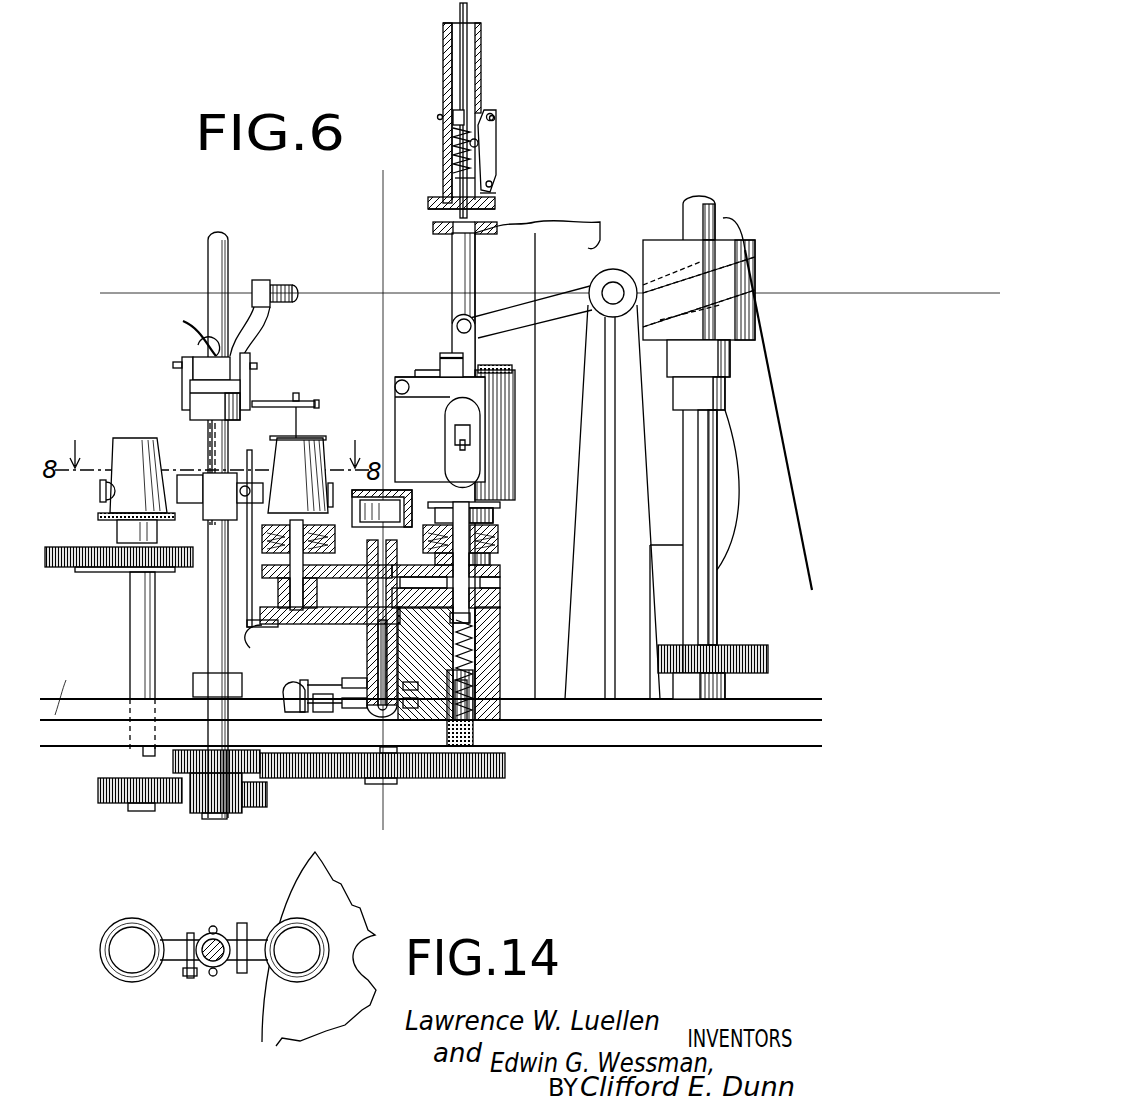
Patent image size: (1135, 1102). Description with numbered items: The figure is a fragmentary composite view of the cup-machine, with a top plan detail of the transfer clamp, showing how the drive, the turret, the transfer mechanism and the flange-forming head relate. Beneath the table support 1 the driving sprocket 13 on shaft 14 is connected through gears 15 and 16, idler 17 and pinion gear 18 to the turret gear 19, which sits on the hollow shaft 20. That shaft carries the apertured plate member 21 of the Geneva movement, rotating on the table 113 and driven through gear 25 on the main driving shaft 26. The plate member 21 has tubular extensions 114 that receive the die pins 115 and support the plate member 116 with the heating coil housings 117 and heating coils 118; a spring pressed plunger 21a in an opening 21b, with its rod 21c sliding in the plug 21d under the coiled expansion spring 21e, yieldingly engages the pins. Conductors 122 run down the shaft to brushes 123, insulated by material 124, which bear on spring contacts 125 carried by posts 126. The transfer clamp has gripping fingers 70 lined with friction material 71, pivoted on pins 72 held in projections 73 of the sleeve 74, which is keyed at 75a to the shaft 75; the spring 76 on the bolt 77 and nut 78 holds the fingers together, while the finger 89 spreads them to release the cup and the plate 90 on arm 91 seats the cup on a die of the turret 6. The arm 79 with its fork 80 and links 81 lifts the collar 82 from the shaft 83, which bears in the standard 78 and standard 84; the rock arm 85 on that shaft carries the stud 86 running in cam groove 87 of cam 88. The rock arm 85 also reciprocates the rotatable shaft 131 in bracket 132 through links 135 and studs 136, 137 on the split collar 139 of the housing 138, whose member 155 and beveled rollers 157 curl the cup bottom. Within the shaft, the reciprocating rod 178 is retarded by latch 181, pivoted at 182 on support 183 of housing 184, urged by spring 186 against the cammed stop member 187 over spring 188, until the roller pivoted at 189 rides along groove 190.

In FIG. 6, the table support 1 is at (61, 682).
In FIG. 6, the turret 6 is at (417, 520).
In FIG. 14, the turret 6 is at (336, 890).
In FIG. 6, the driving sprocket 13 is at (122, 570).
In FIG. 6, the shaft 14 is at (130, 683).
In FIG. 6, the gear 15 is at (105, 803).
In FIG. 6, the gear 16 is at (173, 762).
In FIG. 6, the idler 17 is at (267, 807).
In FIG. 6, the pinion gear 18 is at (230, 813).
In FIG. 6, the turret gear 19 is at (340, 778).
In FIG. 6, the hollow shaft 20 is at (395, 784).
In FIG. 6, the apertured plate member 21 is at (500, 593).
In FIG. 6, the spring pressed plunger 21a is at (500, 607).
In FIG. 6, the opening 21b is at (500, 630).
In FIG. 6, the rod 21c is at (502, 657).
In FIG. 6, the plug 21d is at (470, 746).
In FIG. 6, the coiled expansion spring 21e is at (502, 670).
In FIG. 6, the gear 25 is at (740, 645).
In FIG. 6, the main driving shaft 26 is at (703, 583).
In FIG. 6, the gripping fingers 70 is at (100, 487).
In FIG. 14, the gripping fingers 70 is at (105, 972).
In FIG. 6, the friction material 71 is at (110, 505).
In FIG. 14, the pins 72 is at (215, 928).
In FIG. 6, the projections 73 is at (205, 520).
In FIG. 6, the sleeve 74 is at (208, 440).
In FIG. 14, the sleeve 74 is at (222, 965).
In FIG. 6, the shaft 75 is at (215, 252).
In FIG. 14, the shaft 75 is at (214, 938).
In FIG. 6, the key 75a is at (200, 435).
In FIG. 14, the spring 76 is at (187, 965).
In FIG. 14, the bolt 77 is at (180, 942).
In FIG. 6, the main standard 78 is at (563, 225).
In FIG. 14, the main standard 78 is at (195, 978).
In FIG. 6, the oscillatory arm 79 is at (258, 325).
In FIG. 6, the fork 80 is at (188, 327).
In FIG. 6, the connecting links 81 is at (182, 390).
In FIG. 6, the collar 82 is at (240, 405).
In FIG. 6, the shaft 83 is at (613, 291).
In FIG. 6, the standard 84 is at (582, 412).
In FIG. 6, the rock arm 85 is at (550, 303).
In FIG. 6, the stud 86 is at (717, 250).
In FIG. 6, the cam groove 87 is at (750, 262).
In FIG. 6, the cam 88 is at (755, 305).
In FIG. 6, the finger 89 is at (247, 540).
In FIG. 14, the finger 89 is at (250, 968).
In FIG. 6, the plate 90 is at (310, 440).
In FIG. 6, the arm 91 is at (280, 401).
In FIG. 6, the table 113 is at (300, 624).
In FIG. 6, the tubular extensions 114 is at (295, 585).
In FIG. 6, the pins 115 is at (252, 643).
In FIG. 6, the plate member 116 is at (500, 567).
In FIG. 6, the heating coil housings 117 is at (502, 530).
In FIG. 6, the heating coils 118 is at (335, 540).
In FIG. 6, the conductors 122 is at (395, 527).
In FIG. 6, the brushes 123 is at (375, 712).
In FIG. 6, the insulating material 124 is at (410, 708).
In FIG. 6, the spring contacts 125 is at (340, 683).
In FIG. 6, the posts 126 is at (300, 716).
In FIG. 6, the rotatable shaft 131 is at (473, 262).
In FIG. 6, the bracket 132 is at (435, 240).
In FIG. 6, the links 135 is at (462, 357).
In FIG. 6, the stud 136 is at (468, 320).
In FIG. 6, the studs 137 is at (478, 372).
In FIG. 6, the housing 138 is at (503, 463).
In FIG. 6, the split collar 139 is at (433, 390).
In FIG. 6, the member 155 is at (437, 367).
In FIG. 6, the beveled rollers 157 is at (457, 427).
In FIG. 6, the reciprocating rod 178 is at (460, 60).
In FIG. 6, the latch 181 is at (492, 112).
In FIG. 6, the pivot 182 is at (492, 183).
In FIG. 6, the support 183 is at (496, 193).
In FIG. 6, the housing 184 is at (483, 52).
In FIG. 6, the spring 186 is at (495, 118).
In FIG. 6, the cammed stop member 187 is at (457, 115).
In FIG. 6, the spring 188 is at (448, 145).
In FIG. 6, the roller pivot 189 is at (477, 143).
In FIG. 6, the groove 190 is at (470, 178).